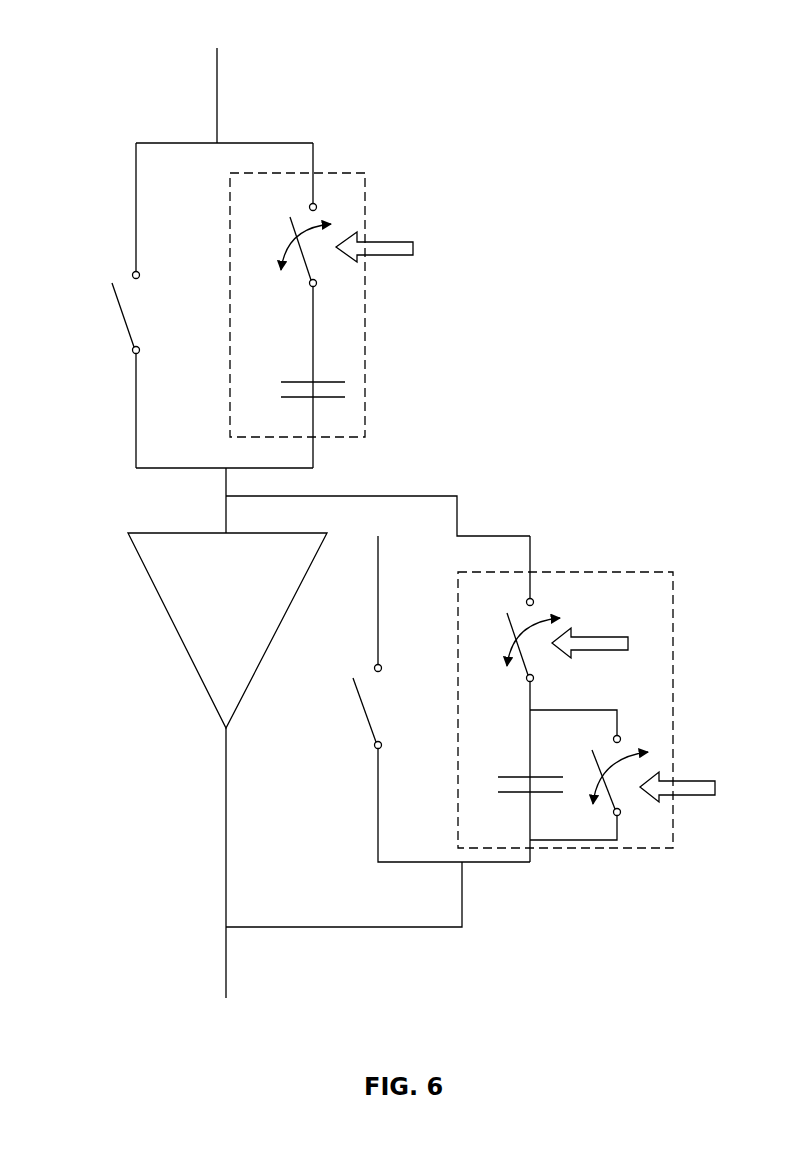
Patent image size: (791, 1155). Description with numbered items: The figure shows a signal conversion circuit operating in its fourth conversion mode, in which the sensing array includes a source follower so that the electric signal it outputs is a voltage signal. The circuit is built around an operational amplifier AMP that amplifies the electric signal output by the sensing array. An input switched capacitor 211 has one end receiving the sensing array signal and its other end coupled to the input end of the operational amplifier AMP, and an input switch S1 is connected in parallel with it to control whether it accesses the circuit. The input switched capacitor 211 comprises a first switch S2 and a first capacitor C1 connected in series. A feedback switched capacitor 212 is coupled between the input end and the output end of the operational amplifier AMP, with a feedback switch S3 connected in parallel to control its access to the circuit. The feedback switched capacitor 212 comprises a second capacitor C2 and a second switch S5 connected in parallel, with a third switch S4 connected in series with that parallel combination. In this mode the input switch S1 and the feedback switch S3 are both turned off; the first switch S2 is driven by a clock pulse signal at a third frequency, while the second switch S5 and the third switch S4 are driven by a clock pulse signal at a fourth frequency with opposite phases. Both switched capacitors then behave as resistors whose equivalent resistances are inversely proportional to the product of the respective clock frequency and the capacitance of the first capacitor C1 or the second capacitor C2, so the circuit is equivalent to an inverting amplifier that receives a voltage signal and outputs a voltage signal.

The input switched capacitor 211 is at (321, 224).
The feedback switched capacitor 212 is at (586, 636).
The input switch S1 is at (104, 313).
The first switch S2 is at (331, 245).
The feedback switch S3 is at (441, 699).
The third switch S4 is at (555, 640).
The second switch S5 is at (653, 769).
The first capacitor C1 is at (294, 392).
The second capacitor C2 is at (520, 774).
The operational amplifier AMP is at (227, 630).